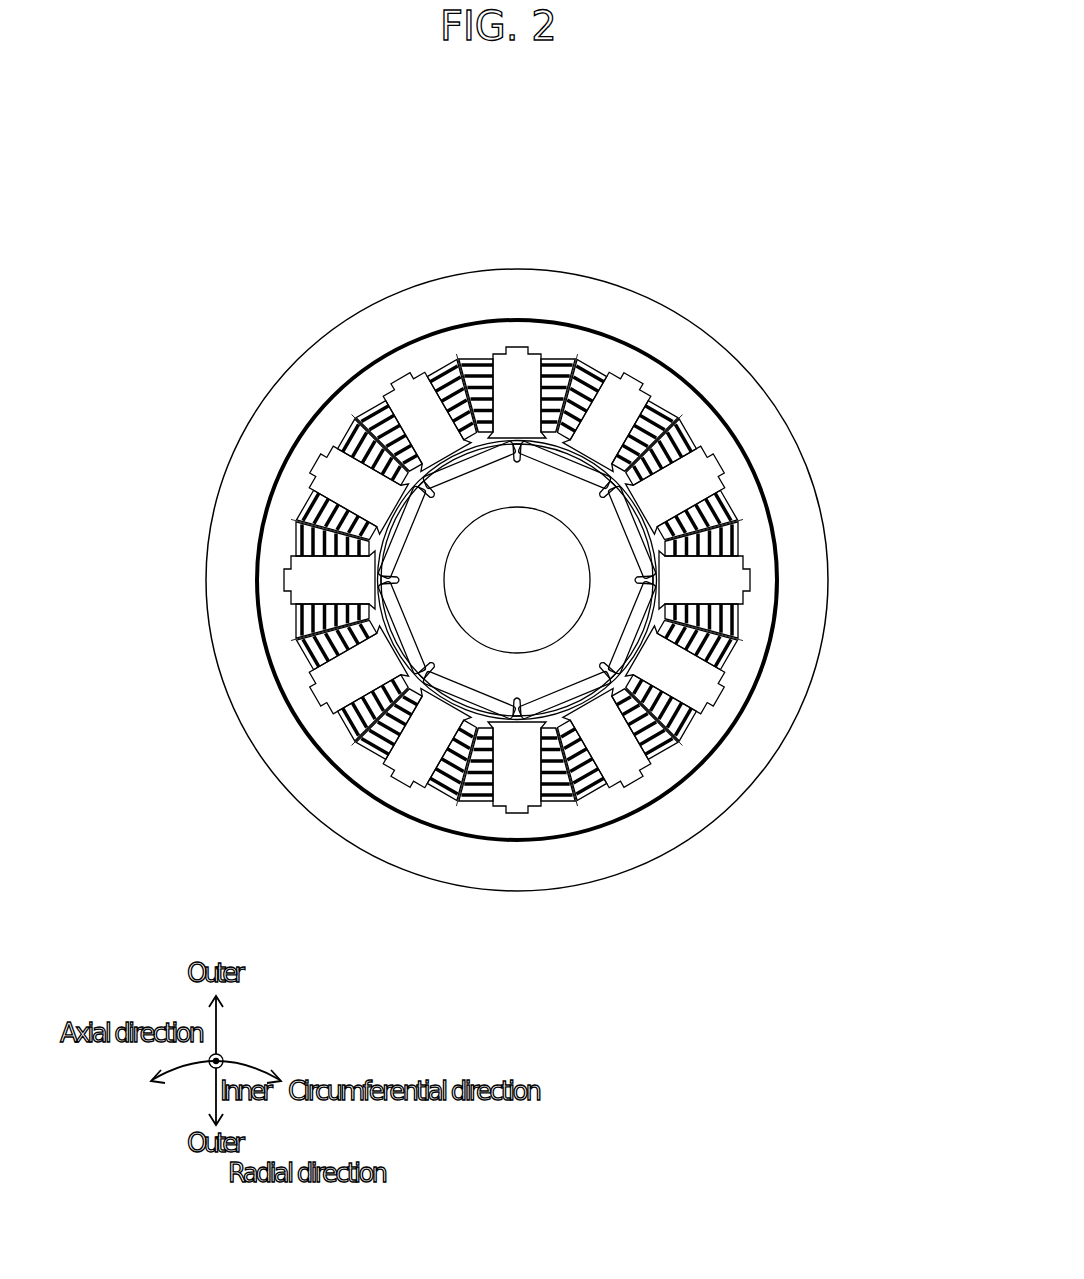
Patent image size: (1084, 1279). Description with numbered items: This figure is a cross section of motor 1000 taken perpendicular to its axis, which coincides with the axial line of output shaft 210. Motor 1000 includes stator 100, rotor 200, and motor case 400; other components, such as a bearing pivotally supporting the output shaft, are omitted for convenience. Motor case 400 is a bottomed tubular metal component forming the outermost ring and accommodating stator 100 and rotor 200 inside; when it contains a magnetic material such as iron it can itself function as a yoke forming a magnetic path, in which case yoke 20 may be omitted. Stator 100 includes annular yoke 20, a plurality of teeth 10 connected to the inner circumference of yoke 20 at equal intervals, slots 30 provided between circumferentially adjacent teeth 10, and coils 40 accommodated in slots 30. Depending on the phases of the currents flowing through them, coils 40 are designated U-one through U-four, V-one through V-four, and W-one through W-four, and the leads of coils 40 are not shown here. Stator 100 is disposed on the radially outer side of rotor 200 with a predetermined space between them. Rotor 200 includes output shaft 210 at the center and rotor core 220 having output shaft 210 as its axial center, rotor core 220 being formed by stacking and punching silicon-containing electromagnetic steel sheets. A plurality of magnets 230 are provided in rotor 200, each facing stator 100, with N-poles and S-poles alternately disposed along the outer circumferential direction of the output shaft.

The motor 1000 is at (290, 287).
The stator 100 is at (745, 193).
The teeth 10 is at (497, 365).
The yoke 20 is at (468, 340).
The slot 30 is at (603, 357).
The coil 40 is at (447, 365).
The rotor 200 is at (117, 512).
The output shaft 210 is at (490, 592).
The rotor core 220 is at (425, 570).
The magnet 230 is at (400, 547).
The motor case 400 is at (745, 412).